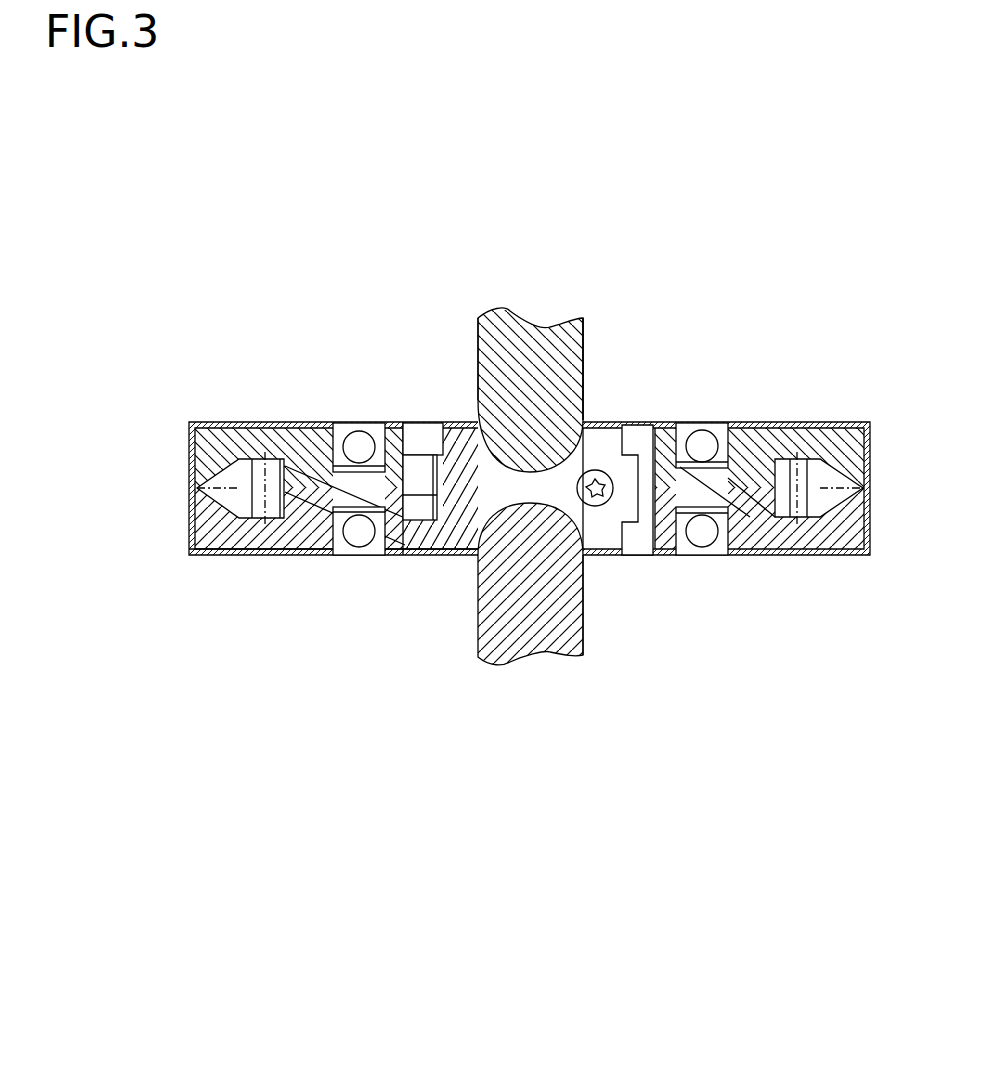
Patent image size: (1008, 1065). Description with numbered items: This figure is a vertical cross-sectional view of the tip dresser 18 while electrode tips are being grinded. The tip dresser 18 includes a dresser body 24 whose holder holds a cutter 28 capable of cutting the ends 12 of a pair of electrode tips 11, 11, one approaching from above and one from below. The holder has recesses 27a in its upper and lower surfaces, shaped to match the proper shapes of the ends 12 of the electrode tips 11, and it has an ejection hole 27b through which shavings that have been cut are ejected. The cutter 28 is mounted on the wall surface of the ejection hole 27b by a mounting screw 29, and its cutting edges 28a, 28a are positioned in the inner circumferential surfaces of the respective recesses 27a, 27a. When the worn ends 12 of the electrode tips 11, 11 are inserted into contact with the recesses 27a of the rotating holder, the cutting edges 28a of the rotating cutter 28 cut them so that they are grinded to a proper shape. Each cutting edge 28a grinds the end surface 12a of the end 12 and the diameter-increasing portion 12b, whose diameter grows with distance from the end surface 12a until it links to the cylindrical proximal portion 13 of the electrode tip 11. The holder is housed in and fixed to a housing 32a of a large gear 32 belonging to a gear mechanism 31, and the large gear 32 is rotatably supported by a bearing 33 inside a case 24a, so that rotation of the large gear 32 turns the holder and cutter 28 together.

The electrode tip 11 is at (640, 135).
The end 12 is at (593, 188).
The end surface 12a is at (535, 465).
The diameter-increasing portion 12b is at (572, 445).
The cylindrical proximal portion 13 is at (584, 367).
The tip dresser 18 is at (223, 218).
The dresser body 24 is at (240, 422).
The case 24a is at (220, 556).
The recess 27a is at (478, 395).
The ejection hole 27b is at (603, 543).
The cutter 28 is at (615, 430).
The cutting edge 28a is at (610, 437).
The mounting screw 29 is at (602, 497).
The gear mechanism 31 is at (301, 498).
The large gear 32 is at (302, 470).
The housing 32a is at (405, 557).
The bearing 33 is at (717, 427).